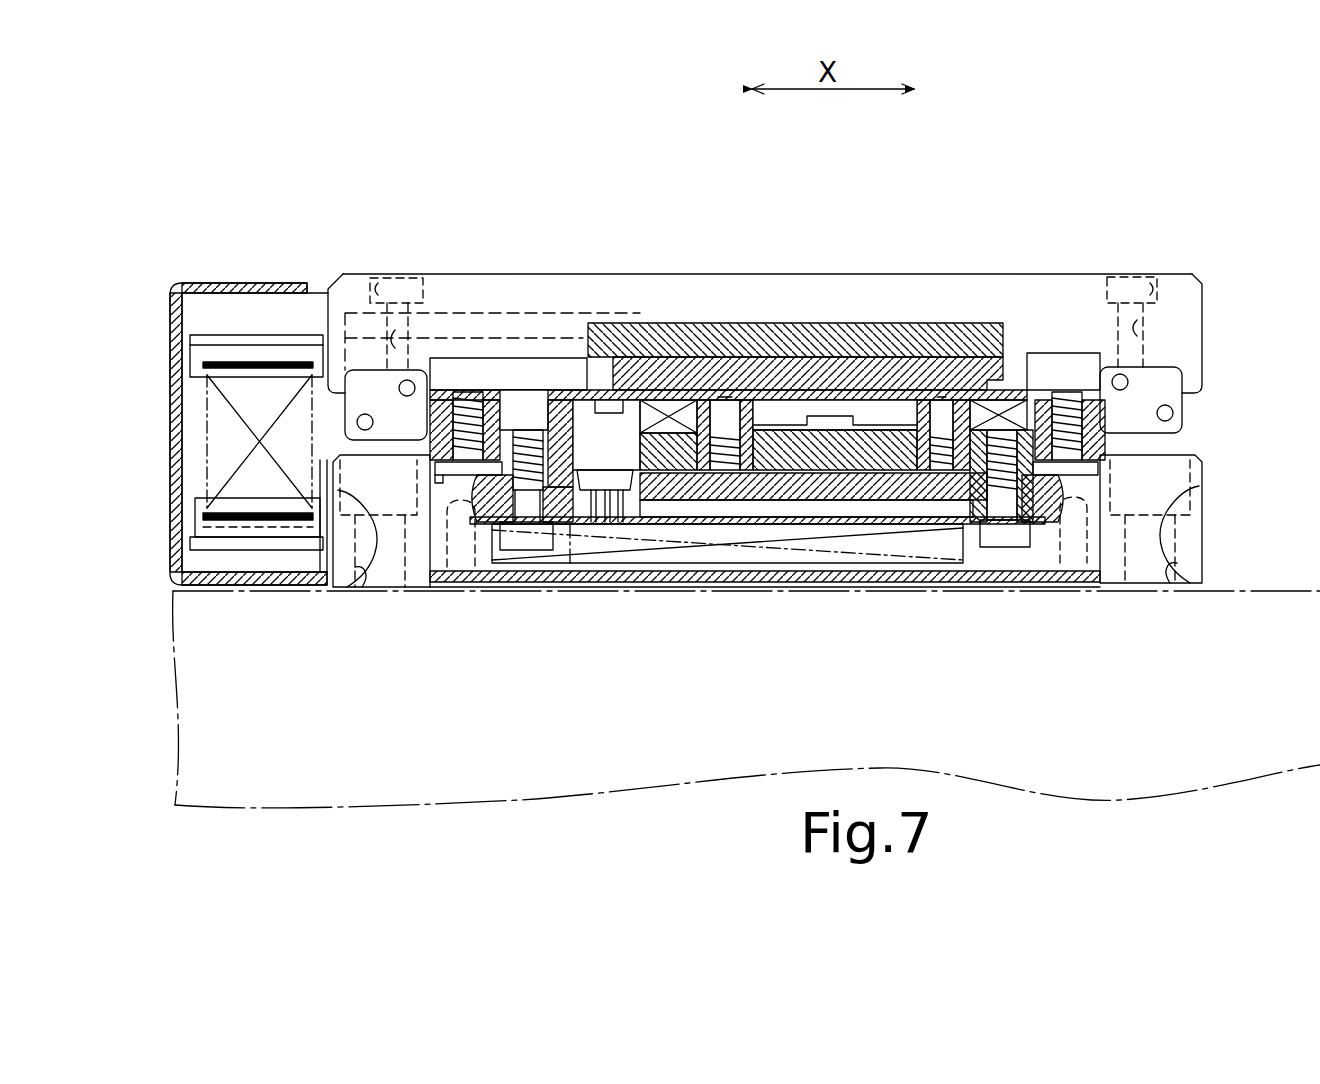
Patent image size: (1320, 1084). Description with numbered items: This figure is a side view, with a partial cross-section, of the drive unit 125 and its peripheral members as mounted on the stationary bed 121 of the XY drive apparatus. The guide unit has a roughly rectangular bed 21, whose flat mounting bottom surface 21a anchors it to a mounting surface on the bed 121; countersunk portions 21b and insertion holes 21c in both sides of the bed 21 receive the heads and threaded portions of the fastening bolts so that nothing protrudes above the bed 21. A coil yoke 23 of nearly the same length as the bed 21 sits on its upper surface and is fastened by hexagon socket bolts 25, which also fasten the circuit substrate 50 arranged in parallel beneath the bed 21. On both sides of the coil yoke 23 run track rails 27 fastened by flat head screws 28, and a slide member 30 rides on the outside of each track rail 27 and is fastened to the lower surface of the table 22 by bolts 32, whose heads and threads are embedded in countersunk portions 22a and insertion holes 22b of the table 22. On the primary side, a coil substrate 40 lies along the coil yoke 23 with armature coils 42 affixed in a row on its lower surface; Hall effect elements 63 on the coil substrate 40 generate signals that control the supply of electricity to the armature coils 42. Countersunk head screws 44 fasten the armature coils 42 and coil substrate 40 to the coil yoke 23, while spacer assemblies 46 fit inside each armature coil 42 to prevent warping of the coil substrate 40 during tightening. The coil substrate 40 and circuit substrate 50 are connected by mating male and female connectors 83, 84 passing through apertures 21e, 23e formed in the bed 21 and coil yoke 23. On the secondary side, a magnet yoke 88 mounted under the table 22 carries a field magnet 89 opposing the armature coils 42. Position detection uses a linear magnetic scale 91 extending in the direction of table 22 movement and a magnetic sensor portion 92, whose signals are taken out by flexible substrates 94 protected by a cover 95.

The bed 21 is at (1207, 526).
The flat mounting bottom surface 21a is at (347, 590).
The countersunk portions 21b is at (362, 592).
The insertion holes 21c is at (380, 590).
The aperture 21e is at (587, 530).
The table 22 is at (1203, 270).
The countersunk portions 22a is at (382, 300).
The insertion holes 22b is at (368, 310).
The coil yoke 23 is at (885, 470).
The aperture 23e is at (665, 520).
The bolts 25 is at (530, 540).
The track rail 27 is at (487, 356).
The flat head screws 28 is at (462, 505).
The slide member 30 is at (342, 416).
The bolts 32 is at (405, 287).
The coil substrate 40 is at (578, 387).
The armature coils 42 is at (1005, 404).
The countersunk head screws 44 is at (713, 398).
The spacer assemblies 46 is at (772, 412).
The circuit substrate 50 is at (750, 526).
The Hall effect elements 63 is at (611, 399).
The male connector 83 is at (605, 495).
The female connector 84 is at (625, 505).
The magnet yoke 88 is at (890, 365).
The field magnet 89 is at (838, 335).
The linear magnetic scale 91 is at (520, 395).
The magnetic sensor portion 92 is at (553, 397).
The flexible substrates 94 is at (217, 465).
The cover 95 is at (176, 332).
The bed 121 is at (882, 771).
The drive unit 125 is at (1208, 148).